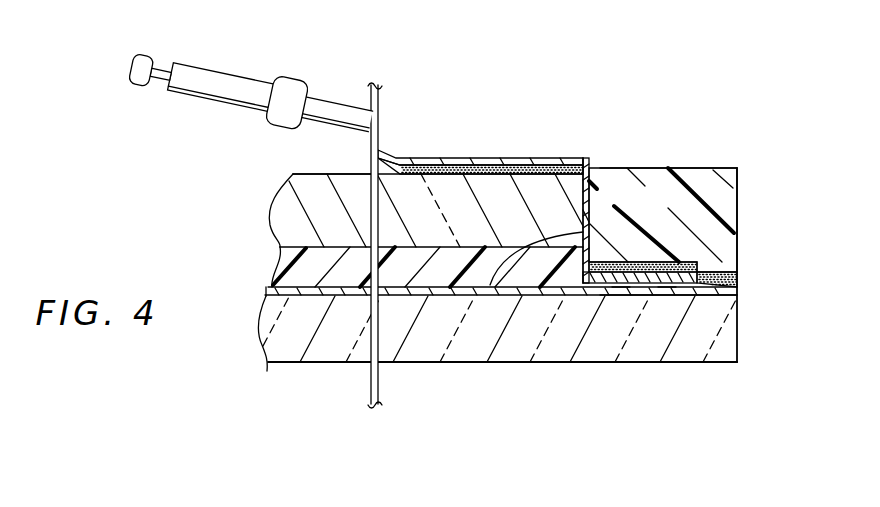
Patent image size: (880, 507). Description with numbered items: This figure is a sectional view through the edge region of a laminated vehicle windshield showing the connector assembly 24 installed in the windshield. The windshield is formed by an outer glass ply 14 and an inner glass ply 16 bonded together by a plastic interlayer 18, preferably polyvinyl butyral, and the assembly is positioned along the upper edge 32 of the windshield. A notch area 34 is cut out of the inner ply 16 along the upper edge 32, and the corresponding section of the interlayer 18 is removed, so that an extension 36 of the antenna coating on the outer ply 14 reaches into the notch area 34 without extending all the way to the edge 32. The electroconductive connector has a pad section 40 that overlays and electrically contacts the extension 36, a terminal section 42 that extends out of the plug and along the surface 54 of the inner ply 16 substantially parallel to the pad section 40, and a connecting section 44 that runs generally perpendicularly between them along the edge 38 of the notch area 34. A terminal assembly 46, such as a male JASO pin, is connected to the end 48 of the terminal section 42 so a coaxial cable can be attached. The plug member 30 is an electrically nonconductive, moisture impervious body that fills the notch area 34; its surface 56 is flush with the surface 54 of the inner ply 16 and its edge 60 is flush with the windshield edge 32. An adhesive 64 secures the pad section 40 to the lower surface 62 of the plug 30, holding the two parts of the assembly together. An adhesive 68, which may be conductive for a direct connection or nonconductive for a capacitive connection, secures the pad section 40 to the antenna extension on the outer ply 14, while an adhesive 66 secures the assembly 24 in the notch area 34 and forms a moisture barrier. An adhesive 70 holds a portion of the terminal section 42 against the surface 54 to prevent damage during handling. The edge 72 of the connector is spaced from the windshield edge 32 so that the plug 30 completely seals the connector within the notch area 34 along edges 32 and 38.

The outer glass ply 14 is at (268, 330).
The inner glass ply 16 is at (283, 200).
The plastic interlayer 18 is at (280, 260).
The connector assembly 24 is at (645, 110).
The plug member 30 is at (717, 180).
The upper edge 32 is at (737, 349).
The notch area 34 is at (490, 285).
The extension 36 is at (290, 288).
The edge of notch area 38 is at (590, 213).
The pad section 40 is at (667, 288).
The terminal section 42 is at (487, 158).
The connecting section 44 is at (587, 217).
The terminal assembly 46 is at (202, 67).
The end of terminal section 48 is at (320, 100).
The surface of inner ply 54 is at (323, 173).
The surface of plug 56 is at (695, 168).
The edge of plug 60 is at (739, 178).
The lower surface of plug 62 is at (705, 278).
The adhesive 64 is at (684, 263).
The adhesive 66 is at (717, 295).
The adhesive 68 is at (622, 288).
The adhesive 70 is at (424, 163).
The edge of connector 72 is at (735, 284).